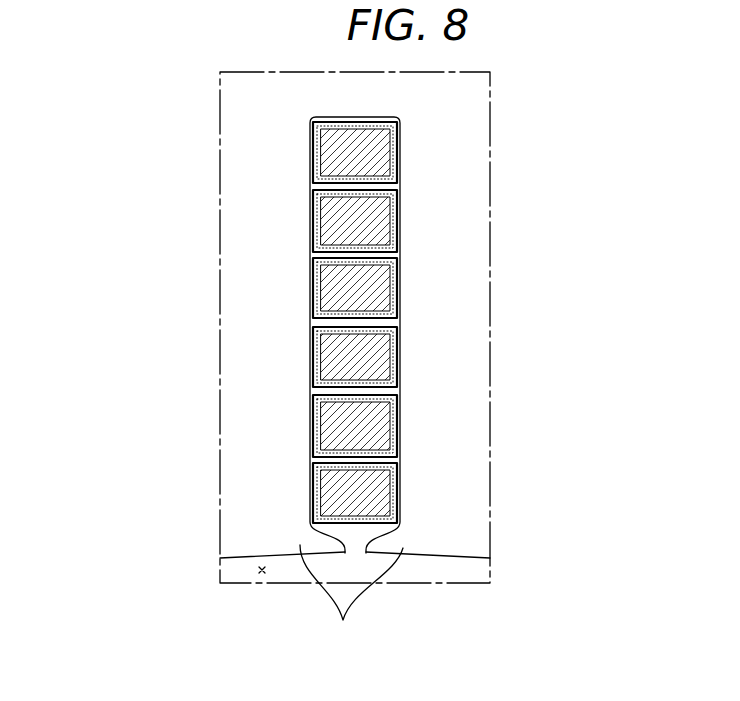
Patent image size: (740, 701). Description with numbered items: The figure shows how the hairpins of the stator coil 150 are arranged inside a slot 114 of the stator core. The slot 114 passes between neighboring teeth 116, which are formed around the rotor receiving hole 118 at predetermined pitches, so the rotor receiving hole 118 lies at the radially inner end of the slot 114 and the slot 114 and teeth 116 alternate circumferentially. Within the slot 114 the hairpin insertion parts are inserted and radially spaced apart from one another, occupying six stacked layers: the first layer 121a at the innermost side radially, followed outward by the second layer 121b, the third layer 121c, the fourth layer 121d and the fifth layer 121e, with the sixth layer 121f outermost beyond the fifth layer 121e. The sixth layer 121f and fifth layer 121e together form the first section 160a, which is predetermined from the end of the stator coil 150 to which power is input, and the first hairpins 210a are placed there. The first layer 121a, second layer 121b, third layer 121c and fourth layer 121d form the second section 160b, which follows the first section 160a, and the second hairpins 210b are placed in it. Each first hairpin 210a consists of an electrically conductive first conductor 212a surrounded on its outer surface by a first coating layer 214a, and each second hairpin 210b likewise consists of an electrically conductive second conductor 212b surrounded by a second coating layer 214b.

The stator coil 150 is at (247, 99).
The first layer 121a is at (271, 493).
The second layer 121b is at (310, 395).
The third layer 121c is at (310, 327).
The fourth layer 121d is at (310, 258).
The fifth layer 121e is at (310, 190).
The sixth layer 121f is at (310, 122).
The first section 160a is at (238, 187).
The second section 160b is at (238, 390).
The first hairpin 210a is at (489, 160).
The second hairpin 210b is at (466, 398).
The first conductor 212a is at (362, 208).
The second conductor 212b is at (376, 472).
The first coating layer 214a is at (393, 209).
The second coating layer 214b is at (315, 287).
The slot 114 is at (349, 530).
The tooth 116 is at (351, 597).
The rotor receiving hole 118 is at (262, 575).